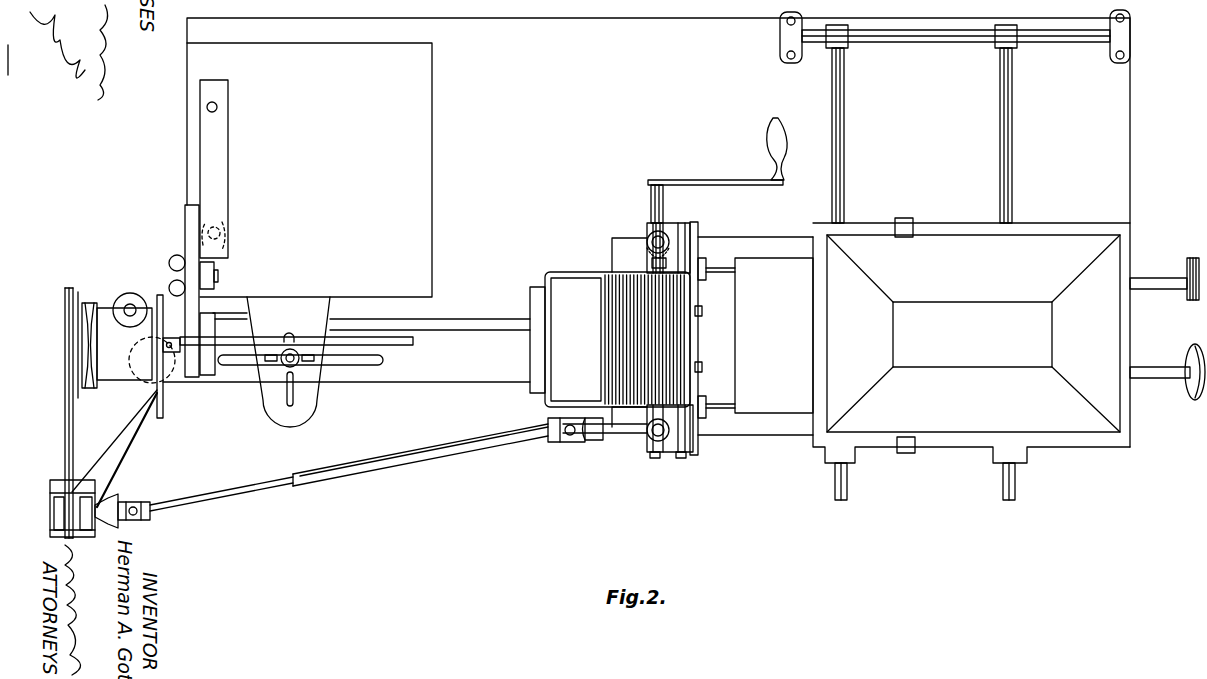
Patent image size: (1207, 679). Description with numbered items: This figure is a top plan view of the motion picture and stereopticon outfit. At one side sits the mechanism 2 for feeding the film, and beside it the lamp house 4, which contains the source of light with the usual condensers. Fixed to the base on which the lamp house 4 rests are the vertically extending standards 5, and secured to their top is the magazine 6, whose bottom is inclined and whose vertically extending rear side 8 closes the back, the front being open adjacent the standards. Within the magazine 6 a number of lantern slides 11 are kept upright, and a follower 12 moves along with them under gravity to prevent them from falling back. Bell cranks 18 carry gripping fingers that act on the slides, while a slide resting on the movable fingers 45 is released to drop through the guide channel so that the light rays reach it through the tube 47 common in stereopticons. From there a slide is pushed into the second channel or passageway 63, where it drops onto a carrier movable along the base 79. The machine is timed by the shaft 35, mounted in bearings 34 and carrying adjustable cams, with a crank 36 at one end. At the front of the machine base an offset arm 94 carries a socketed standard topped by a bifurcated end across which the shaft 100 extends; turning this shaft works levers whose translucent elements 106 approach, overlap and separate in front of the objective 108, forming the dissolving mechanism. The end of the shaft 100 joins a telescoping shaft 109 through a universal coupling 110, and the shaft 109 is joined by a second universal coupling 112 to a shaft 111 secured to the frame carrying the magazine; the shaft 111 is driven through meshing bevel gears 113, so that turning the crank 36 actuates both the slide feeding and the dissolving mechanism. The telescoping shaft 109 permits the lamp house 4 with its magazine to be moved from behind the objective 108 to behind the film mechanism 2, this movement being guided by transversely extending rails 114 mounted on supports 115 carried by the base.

The mechanism for feeding the film 2 is at (309, 170).
The lamp house 4 is at (973, 333).
The vertically extending standards 5 is at (694, 243).
The magazine 6 is at (560, 408).
The vertically extending rear side 8 is at (545, 277).
The lantern slides 11 is at (620, 290).
The follower 12 is at (578, 288).
The bell cranks 18 is at (654, 262).
The bearings 34 is at (680, 227).
The shaft 35 is at (650, 221).
The crank 36 is at (673, 218).
The movable fingers 45 is at (699, 364).
The tube 47 is at (530, 362).
The second channel or passageway 63 is at (705, 264).
The base 79 is at (782, 428).
The offset arm 94 is at (118, 448).
The shaft 100 is at (100, 507).
The translucent elements 106 is at (80, 288).
The objective 108 is at (98, 312).
The shaft 109 is at (308, 488).
The universal coupling 110 is at (140, 522).
The shaft 111 is at (605, 440).
The second universal coupling 112 is at (568, 441).
The meshing bevel gears 113 is at (664, 183).
The transversely extending rails 114 is at (845, 152).
The supports 115 is at (948, 42).